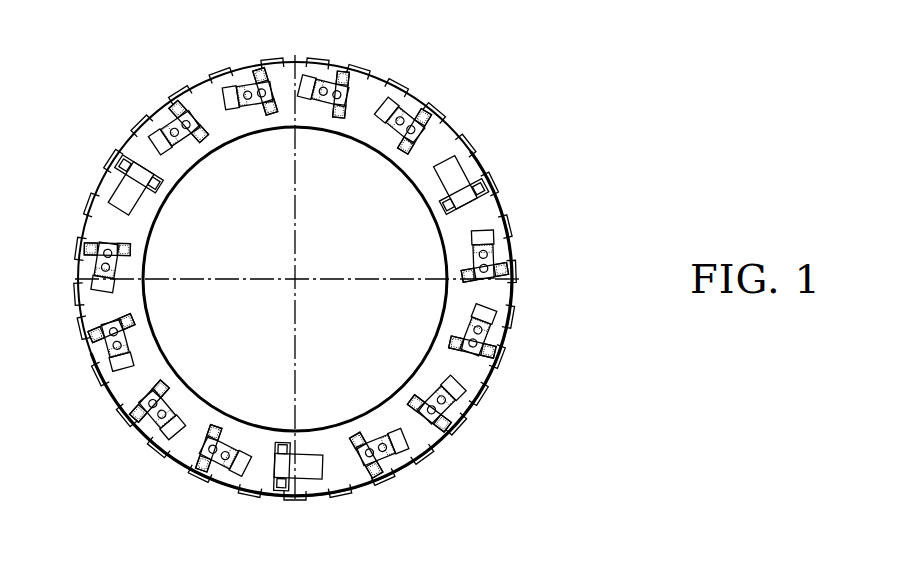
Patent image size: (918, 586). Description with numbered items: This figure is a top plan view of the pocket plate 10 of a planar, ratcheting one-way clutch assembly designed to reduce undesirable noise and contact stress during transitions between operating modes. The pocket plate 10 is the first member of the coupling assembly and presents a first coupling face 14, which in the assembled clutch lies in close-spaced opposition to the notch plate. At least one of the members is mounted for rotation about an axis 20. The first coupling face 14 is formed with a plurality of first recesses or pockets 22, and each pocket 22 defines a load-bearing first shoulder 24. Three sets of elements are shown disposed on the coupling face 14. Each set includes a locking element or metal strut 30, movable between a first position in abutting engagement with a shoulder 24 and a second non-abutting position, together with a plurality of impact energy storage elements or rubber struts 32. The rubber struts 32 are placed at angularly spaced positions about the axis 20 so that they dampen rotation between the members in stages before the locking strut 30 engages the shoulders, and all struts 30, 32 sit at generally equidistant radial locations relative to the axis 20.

The pocket plate 10 is at (297, 279).
The first coupling face 14 is at (492, 299).
The axis 20 is at (300, 282).
The first recesses or pockets 22 is at (300, 307).
The load-bearing first shoulder 24 is at (299, 286).
The locking element or metal strut 30 is at (125, 172).
The impact energy storage elements or rubber struts 32 is at (295, 279).